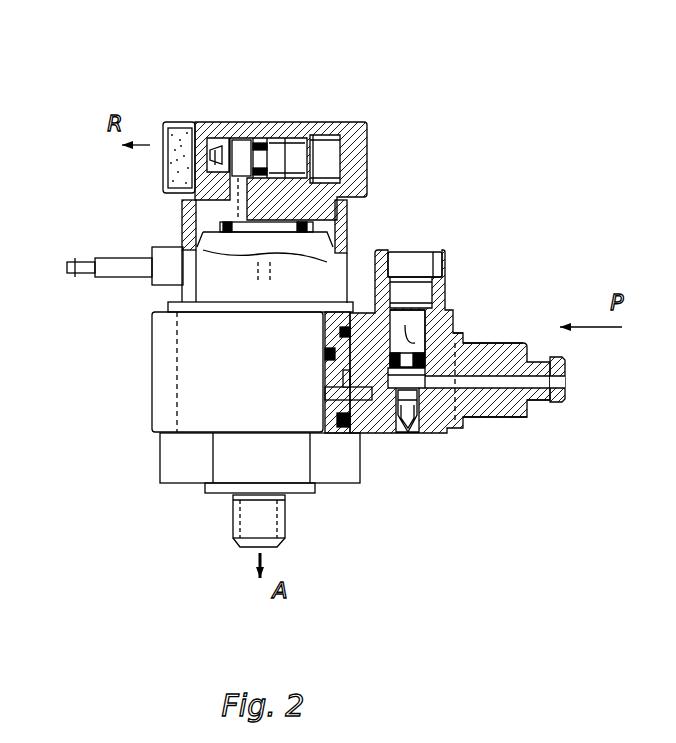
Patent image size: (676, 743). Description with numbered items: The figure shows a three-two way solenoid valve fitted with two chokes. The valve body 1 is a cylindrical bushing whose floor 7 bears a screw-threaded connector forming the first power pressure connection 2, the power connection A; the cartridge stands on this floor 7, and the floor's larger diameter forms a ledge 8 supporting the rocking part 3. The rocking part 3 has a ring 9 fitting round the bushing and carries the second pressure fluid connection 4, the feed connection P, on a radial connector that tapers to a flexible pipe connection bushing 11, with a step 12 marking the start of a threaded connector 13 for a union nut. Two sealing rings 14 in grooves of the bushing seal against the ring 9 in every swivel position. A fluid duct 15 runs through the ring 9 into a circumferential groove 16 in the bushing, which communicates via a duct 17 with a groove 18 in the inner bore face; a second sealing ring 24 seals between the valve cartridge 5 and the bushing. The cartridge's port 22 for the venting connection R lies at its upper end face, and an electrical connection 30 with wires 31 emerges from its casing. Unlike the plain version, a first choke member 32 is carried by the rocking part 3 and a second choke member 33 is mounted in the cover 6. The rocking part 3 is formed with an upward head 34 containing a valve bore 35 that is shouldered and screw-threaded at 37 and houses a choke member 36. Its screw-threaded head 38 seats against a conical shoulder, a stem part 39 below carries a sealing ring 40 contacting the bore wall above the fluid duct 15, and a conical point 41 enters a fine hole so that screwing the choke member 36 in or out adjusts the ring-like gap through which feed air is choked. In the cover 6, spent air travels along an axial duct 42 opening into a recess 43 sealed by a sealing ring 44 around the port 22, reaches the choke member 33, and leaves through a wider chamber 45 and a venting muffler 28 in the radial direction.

The valve body 1 is at (150, 442).
The power pressure connection 2 is at (240, 547).
The rocking part 3 is at (147, 370).
The second pressure fluid connection 4 is at (572, 382).
The valve cartridge 5 is at (363, 190).
The cover 6 is at (333, 122).
The floor 7 is at (177, 470).
The ledge 8 is at (352, 440).
The ring 9 is at (360, 440).
The flexible pipe connection bushing 11 is at (540, 402).
The step 12 is at (537, 346).
The threaded connector 13 is at (505, 420).
The sealing rings 14 is at (320, 430).
The fluid duct 15 is at (497, 422).
The circumferential groove 16 is at (330, 390).
The duct 17 is at (325, 392).
The groove 18 is at (330, 405).
The port 22 is at (172, 187).
The second sealing ring 24 is at (345, 355).
The venting muffler 28 is at (172, 122).
The electrical connection 30 is at (173, 265).
The wires 31 is at (82, 263).
The first choke member 32 is at (435, 283).
The second choke member 33 is at (279, 130).
The head 34 is at (447, 263).
The valve bore 35 is at (433, 330).
The choke member 36 is at (417, 397).
The screw thread 37 is at (410, 252).
The screw-threaded head 38 is at (452, 293).
The stem part 39 is at (458, 336).
The sealing ring 40 is at (468, 380).
The conical point 41 is at (405, 395).
The axial duct 42 is at (222, 142).
The recess 43 is at (238, 150).
The sealing ring 44 is at (296, 190).
The chamber 45 is at (217, 152).